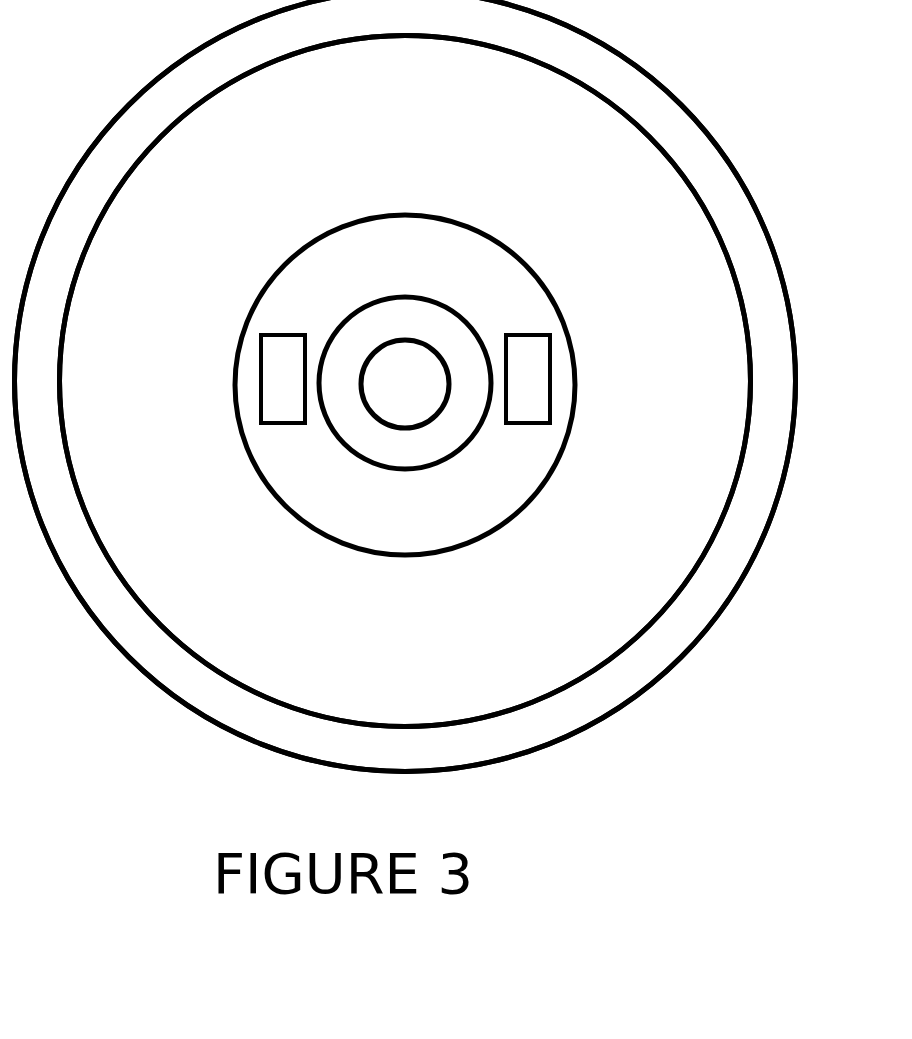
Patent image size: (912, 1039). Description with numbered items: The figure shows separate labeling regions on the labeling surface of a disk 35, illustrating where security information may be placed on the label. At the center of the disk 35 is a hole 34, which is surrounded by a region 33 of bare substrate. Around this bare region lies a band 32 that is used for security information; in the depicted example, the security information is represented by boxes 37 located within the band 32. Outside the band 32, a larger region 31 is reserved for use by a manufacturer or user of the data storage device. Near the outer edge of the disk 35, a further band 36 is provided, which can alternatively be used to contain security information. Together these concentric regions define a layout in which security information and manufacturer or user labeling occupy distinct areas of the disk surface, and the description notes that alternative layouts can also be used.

The region 31 is at (551, 626).
The band 32 is at (489, 506).
The region of bare substrate 33 is at (426, 462).
The hole 34 is at (424, 396).
The disk 35 is at (577, 737).
The band 36 is at (423, 761).
The boxes 37 is at (301, 396).